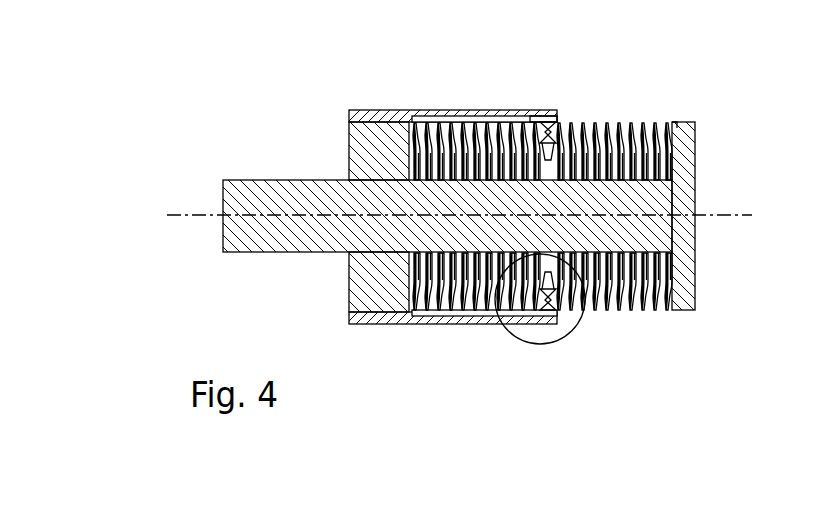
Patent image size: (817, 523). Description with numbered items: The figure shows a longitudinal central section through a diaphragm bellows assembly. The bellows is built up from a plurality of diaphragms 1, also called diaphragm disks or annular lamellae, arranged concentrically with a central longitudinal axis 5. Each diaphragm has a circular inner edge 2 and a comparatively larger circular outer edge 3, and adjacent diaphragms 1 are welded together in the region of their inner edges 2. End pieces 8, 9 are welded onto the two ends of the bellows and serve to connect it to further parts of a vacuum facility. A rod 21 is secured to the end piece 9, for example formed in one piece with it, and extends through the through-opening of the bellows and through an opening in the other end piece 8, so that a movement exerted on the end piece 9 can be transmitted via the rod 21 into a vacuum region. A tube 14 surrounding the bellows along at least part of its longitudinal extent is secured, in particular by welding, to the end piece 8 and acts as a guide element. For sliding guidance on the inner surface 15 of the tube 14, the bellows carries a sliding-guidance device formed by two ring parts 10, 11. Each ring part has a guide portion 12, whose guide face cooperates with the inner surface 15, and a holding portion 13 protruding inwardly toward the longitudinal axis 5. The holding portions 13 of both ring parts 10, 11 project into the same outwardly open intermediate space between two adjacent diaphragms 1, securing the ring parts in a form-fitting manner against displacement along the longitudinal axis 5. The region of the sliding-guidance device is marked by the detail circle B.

The diaphragm 1 is at (643, 150).
The inner edge 2 is at (812, 75).
The outer edge 3 is at (647, 307).
The central longitudinal axis 5 is at (204, 216).
The end piece 8 is at (368, 277).
The end piece 9 is at (685, 288).
The ring part 10 is at (541, 321).
The ring part 11 is at (543, 115).
The guide portion 12 is at (558, 120).
The holding portion 13 is at (563, 123).
The tube 14 is at (436, 120).
The inner surface 15 is at (468, 113).
The rod 21 is at (256, 193).
The detail B is at (563, 340).